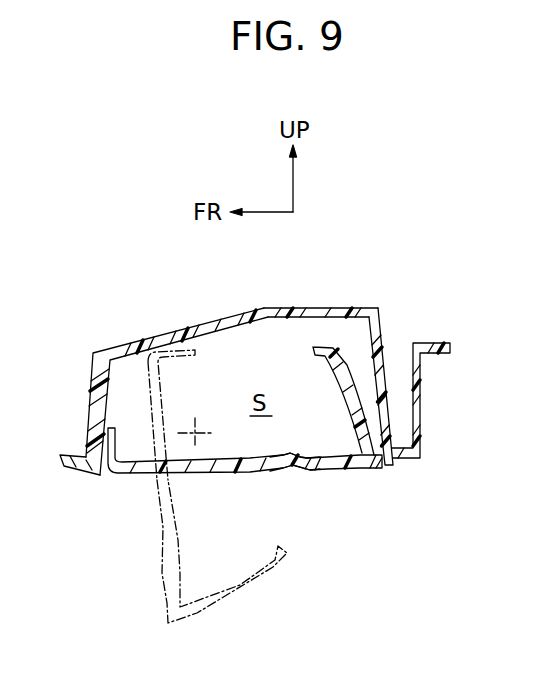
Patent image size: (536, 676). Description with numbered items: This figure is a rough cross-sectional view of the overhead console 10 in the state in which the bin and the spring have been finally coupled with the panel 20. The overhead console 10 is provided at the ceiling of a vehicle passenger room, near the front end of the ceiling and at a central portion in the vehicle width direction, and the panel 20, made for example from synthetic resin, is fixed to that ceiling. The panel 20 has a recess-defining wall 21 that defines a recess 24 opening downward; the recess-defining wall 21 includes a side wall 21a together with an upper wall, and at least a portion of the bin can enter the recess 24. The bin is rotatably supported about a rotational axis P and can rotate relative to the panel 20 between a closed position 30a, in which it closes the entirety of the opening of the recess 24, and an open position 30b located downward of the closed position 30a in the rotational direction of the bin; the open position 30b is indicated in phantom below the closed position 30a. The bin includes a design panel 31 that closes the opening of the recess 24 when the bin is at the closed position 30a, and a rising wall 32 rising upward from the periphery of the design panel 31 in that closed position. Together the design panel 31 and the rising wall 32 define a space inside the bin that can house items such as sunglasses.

The overhead console 10 is at (356, 301).
The panel 20 is at (285, 309).
The recess-defining wall 21 is at (162, 340).
The side wall 21a is at (100, 404).
The recess 24 is at (209, 333).
The closed position 30a is at (323, 469).
The open position 30b is at (233, 595).
The design panel 31 is at (295, 466).
The rising wall 32 is at (357, 407).
The rotational axis P is at (198, 430).